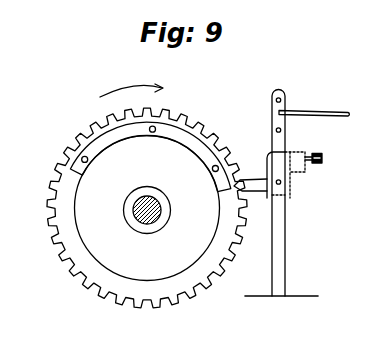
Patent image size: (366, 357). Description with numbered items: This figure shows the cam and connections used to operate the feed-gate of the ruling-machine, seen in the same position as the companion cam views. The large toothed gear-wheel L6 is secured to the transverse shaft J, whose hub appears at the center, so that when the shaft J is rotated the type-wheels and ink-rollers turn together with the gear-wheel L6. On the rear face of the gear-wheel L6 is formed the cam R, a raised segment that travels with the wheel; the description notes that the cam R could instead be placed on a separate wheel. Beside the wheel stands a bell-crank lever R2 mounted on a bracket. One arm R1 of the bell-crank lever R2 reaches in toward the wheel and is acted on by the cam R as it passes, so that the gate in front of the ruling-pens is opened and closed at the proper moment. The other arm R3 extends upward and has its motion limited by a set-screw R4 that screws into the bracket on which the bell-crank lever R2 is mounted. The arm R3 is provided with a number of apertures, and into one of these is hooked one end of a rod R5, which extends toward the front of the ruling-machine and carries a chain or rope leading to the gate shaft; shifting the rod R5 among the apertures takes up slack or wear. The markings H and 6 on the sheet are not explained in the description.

The gear-wheel L6 is at (95, 272).
The cam R is at (97, 137).
The bell-crank lever R2 is at (216, 159).
The transverse shaft J is at (140, 220).
The frame H is at (210, 90).
The sheet numeral 6 is at (7, 138).
The arm of bell-crank lever R3 is at (285, 132).
The rod R5 is at (341, 110).
The arm of bell-crank lever R1 is at (257, 180).
The set-screw R4 is at (322, 160).